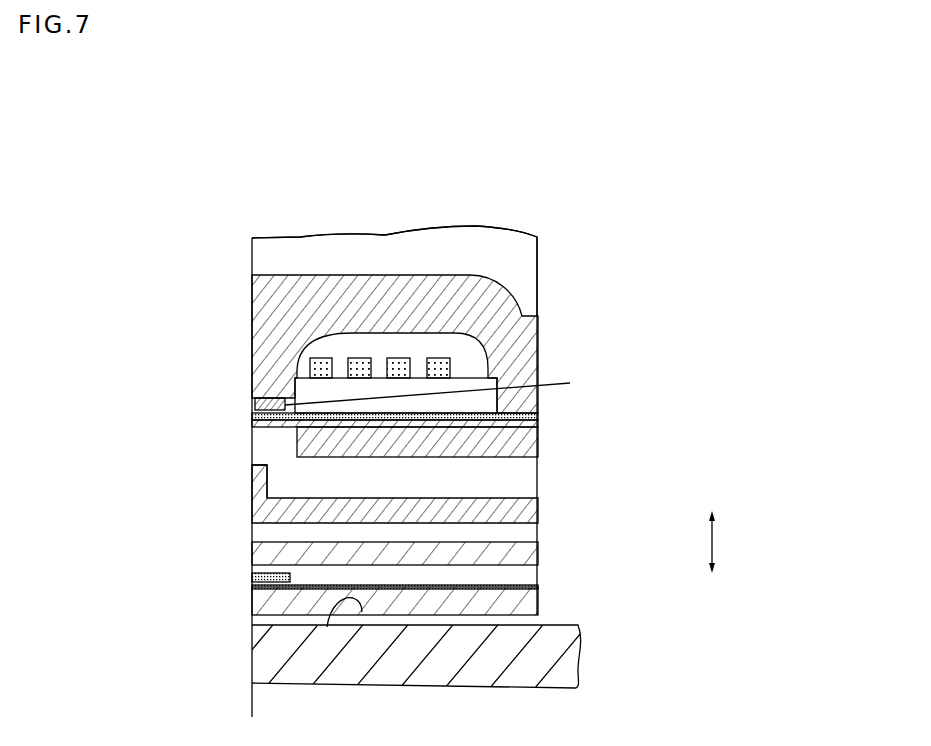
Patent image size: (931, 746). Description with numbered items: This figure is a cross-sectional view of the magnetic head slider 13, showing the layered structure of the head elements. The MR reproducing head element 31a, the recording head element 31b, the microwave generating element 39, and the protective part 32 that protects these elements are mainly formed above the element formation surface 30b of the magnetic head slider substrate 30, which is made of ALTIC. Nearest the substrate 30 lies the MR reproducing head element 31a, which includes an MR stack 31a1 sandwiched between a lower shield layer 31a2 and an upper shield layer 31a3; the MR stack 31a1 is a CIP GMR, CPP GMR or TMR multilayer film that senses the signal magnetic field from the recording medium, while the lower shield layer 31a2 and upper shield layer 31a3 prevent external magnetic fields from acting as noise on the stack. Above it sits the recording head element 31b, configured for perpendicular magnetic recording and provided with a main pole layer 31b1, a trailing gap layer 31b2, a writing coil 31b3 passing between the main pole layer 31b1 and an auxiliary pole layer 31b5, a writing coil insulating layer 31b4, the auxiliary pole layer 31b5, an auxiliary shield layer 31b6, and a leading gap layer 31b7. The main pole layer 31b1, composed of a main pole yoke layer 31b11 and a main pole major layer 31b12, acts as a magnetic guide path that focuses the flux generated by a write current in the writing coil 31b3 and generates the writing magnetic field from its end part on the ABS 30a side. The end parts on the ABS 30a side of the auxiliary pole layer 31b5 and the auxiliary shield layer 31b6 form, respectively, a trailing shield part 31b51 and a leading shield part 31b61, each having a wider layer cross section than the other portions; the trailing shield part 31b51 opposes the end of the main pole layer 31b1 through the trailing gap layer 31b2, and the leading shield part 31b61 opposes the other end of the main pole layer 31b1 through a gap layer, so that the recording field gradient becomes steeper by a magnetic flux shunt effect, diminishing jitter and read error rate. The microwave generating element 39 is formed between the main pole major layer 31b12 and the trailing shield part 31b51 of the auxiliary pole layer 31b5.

The magnetic head 13 is at (538, 206).
The protective part 32 is at (388, 245).
The microwave generating element 39 is at (570, 383).
The magnetic head slider substrate 30 is at (558, 651).
The ABS 30a is at (252, 665).
The element formation surface 30b is at (362, 612).
The MR reproducing head element 31a is at (148, 533).
The MR stack 31a1 is at (252, 578).
The lower shield layer 31a2 is at (252, 604).
The upper shield layer 31a3 is at (252, 552).
The recording head element 31b is at (75, 263).
The main pole layer 31b1 is at (150, 395).
The trailing gap layer 31b2 is at (308, 392).
The writing coil 31b3 is at (363, 341).
The writing coil insulating layer 31b4 is at (258, 275).
The auxiliary pole layer 31b5 is at (357, 367).
The trailing shield part 31b51 is at (272, 366).
The auxiliary shield layer 31b6 is at (252, 507).
The leading shield part 31b61 is at (252, 482).
The leading gap layer 31b7 is at (250, 447).
The main pole yoke layer 31b11 is at (293, 445).
The main pole major layer 31b12 is at (250, 419).